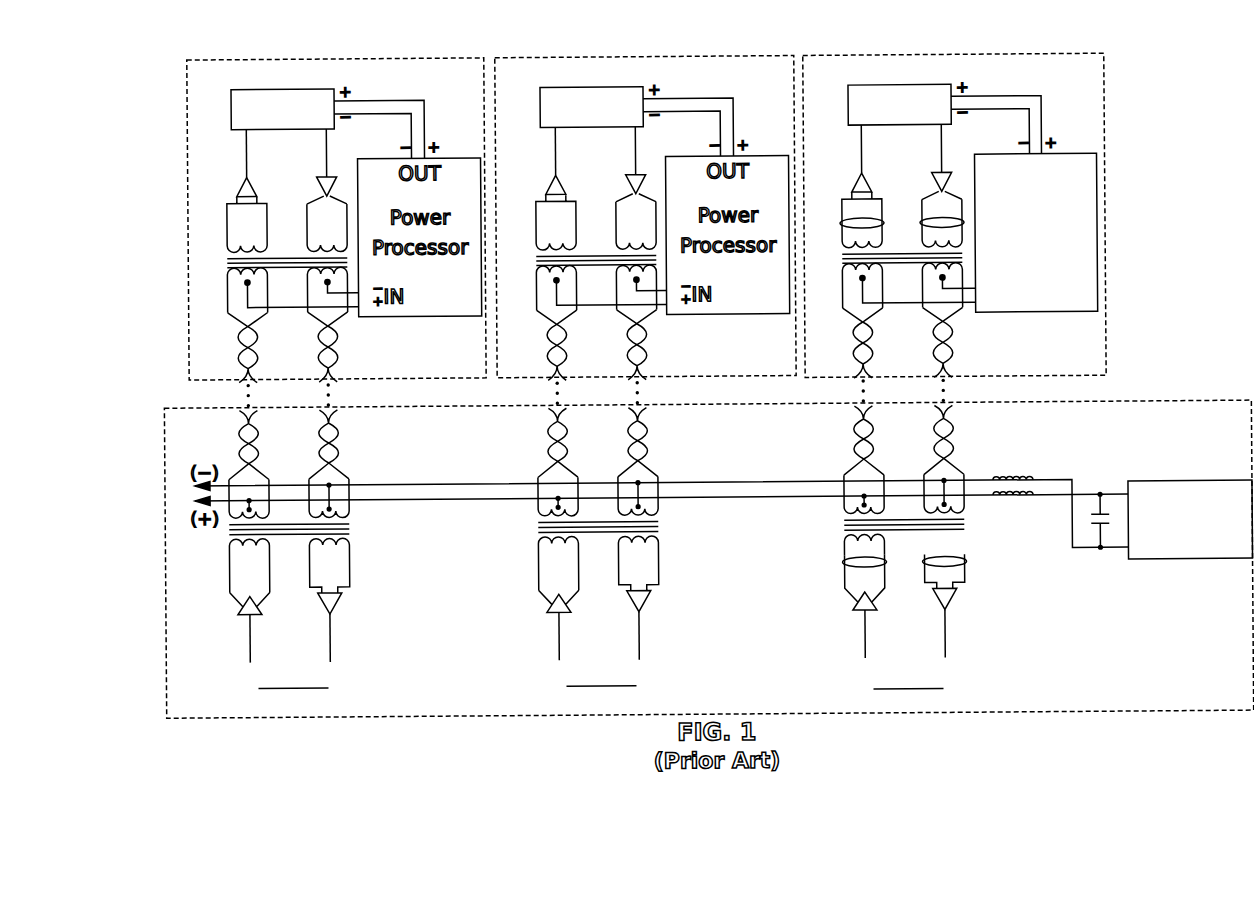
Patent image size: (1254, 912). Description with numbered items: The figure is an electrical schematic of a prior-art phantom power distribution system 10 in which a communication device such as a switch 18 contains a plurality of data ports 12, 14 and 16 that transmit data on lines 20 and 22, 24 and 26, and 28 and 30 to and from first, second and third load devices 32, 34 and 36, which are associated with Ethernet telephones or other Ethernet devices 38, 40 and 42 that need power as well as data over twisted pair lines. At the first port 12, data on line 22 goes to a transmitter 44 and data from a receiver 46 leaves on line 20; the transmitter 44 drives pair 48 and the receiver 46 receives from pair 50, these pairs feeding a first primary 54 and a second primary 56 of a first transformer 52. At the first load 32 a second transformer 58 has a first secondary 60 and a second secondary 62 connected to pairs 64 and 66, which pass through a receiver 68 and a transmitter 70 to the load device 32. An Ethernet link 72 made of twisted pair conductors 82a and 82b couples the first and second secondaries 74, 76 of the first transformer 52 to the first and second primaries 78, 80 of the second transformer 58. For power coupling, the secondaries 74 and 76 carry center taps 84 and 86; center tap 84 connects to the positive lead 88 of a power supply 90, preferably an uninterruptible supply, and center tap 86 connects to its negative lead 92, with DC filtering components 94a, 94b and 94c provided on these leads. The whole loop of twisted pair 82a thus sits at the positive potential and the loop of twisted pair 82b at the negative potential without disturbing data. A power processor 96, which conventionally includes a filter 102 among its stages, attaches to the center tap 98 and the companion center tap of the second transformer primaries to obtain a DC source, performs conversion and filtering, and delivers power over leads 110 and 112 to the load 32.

The system 10 is at (225, 60).
The Ethernet device 42 is at (446, 58).
The Ethernet device 40 is at (755, 58).
The Ethernet device 38 is at (1058, 59).
The third load device 36 is at (278, 90).
The second load device 34 is at (587, 90).
The first load device 32 is at (895, 91).
The filter 102 is at (287, 130).
The lead 110 is at (990, 102).
The lead 112 is at (972, 116).
The receiver 68 is at (856, 188).
The transmitter 70 is at (933, 188).
The pair 64 is at (848, 224).
The pair 66 is at (928, 226).
The second transformer 58 is at (926, 250).
The first secondary 60 is at (844, 264).
The second secondary 62 is at (970, 268).
The center tap 98 is at (866, 285).
The first primary 78 is at (844, 304).
The second primary 80 is at (962, 298).
The power processor 96 is at (1062, 319).
The Ethernet link 72 is at (953, 396).
The twisted pair conductor 82a is at (854, 435).
The twisted pair conductor 82b is at (955, 438).
The center tap 84 is at (847, 482).
The center tap 86 is at (926, 482).
The first secondary 74 is at (842, 487).
The second secondary 76 is at (948, 489).
The first transformer 52 is at (844, 543).
The first primary 54 is at (844, 554).
The second primary 56 is at (965, 553).
The pair 48 is at (844, 588).
The pair 50 is at (948, 580).
The transmitter 44 is at (850, 610).
The receiver 46 is at (954, 605).
The line 22 is at (866, 645).
The line 20 is at (943, 644).
The line 26 is at (558, 642).
The line 24 is at (638, 642).
The line 30 is at (249, 642).
The line 28 is at (329, 642).
The first port 12 is at (910, 694).
The data port 14 is at (603, 689).
The data port 16 is at (295, 689).
The switch 18 is at (1217, 406).
The negative lead 92 is at (440, 484).
The positive lead 88 is at (440, 503).
The DC filtering component 94a is at (1002, 479).
The DC filtering component 94b is at (1038, 496).
The DC filtering component 94c is at (1090, 525).
The power supply 90 is at (1215, 489).